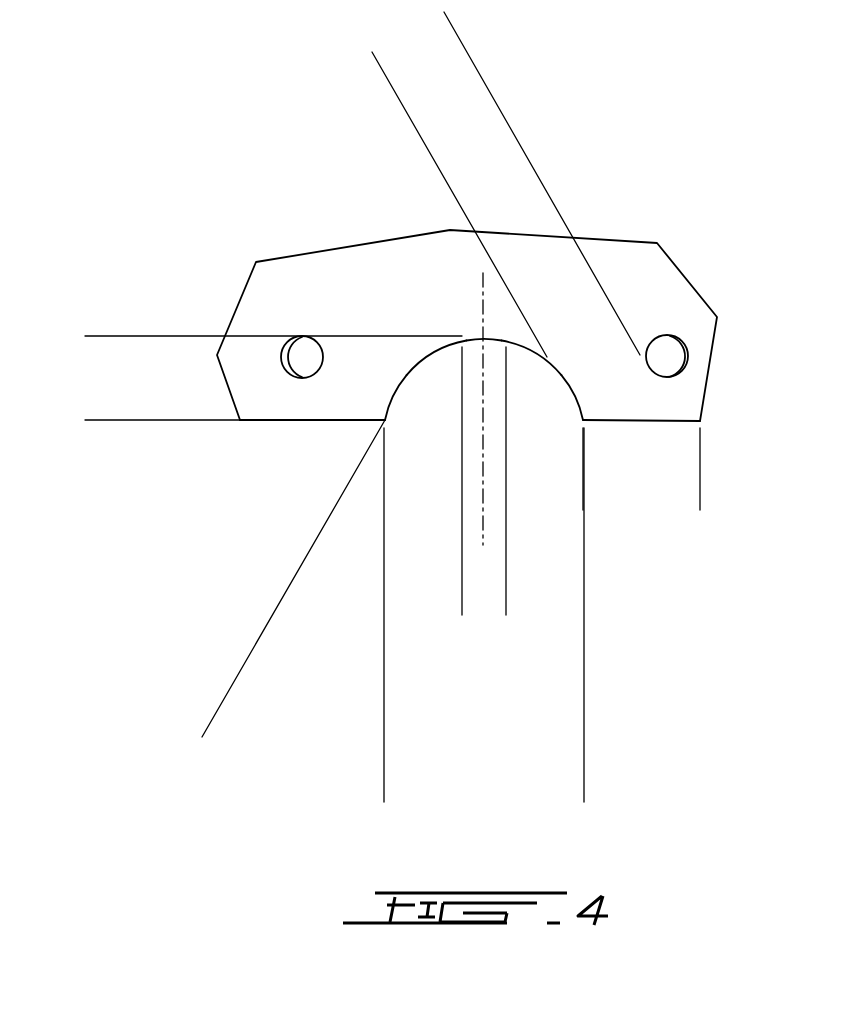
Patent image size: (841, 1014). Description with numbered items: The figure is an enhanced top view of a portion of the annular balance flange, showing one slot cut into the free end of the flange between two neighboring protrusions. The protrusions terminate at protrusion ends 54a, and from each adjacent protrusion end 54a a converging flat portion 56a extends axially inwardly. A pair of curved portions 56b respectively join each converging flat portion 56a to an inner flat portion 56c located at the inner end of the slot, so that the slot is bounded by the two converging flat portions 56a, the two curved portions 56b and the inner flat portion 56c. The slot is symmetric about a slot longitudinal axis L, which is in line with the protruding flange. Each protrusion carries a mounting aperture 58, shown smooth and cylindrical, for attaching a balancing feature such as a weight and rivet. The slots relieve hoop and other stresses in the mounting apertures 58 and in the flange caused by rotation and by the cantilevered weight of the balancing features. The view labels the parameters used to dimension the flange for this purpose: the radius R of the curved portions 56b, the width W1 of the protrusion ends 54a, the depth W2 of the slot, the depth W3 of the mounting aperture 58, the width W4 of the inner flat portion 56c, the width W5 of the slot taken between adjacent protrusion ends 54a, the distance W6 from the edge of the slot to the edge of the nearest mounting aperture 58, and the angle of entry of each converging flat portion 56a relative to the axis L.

The protrusion end 54a is at (262, 420).
The converging flat portion 56a is at (391, 400).
The curved portion 56b is at (442, 345).
The inner flat portion 56c is at (498, 338).
The mounting aperture 58 is at (667, 350).
The slot longitudinal axis L is at (480, 298).
The radius of the curved portions R is at (425, 360).
The width of the protrusion ends W1 is at (699, 470).
The depth of each slot W2 is at (94, 337).
The depth of each mounting aperture W3 is at (301, 337).
The width of each inner flat portion W4 is at (505, 605).
The width of each slot W5 is at (583, 791).
The distance from slot edge to mounting aperture edge W6 is at (448, 23).